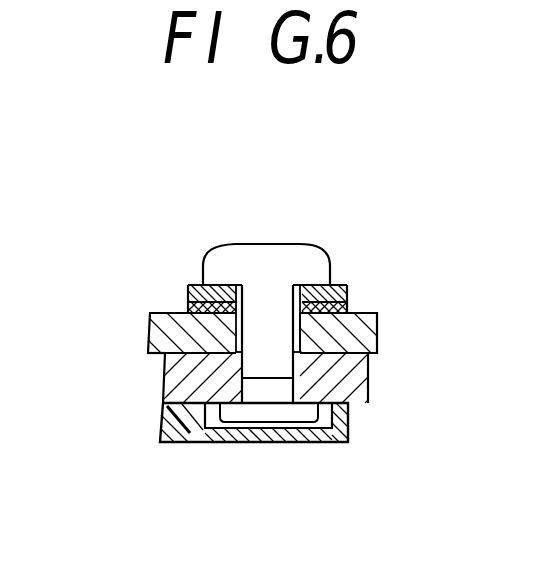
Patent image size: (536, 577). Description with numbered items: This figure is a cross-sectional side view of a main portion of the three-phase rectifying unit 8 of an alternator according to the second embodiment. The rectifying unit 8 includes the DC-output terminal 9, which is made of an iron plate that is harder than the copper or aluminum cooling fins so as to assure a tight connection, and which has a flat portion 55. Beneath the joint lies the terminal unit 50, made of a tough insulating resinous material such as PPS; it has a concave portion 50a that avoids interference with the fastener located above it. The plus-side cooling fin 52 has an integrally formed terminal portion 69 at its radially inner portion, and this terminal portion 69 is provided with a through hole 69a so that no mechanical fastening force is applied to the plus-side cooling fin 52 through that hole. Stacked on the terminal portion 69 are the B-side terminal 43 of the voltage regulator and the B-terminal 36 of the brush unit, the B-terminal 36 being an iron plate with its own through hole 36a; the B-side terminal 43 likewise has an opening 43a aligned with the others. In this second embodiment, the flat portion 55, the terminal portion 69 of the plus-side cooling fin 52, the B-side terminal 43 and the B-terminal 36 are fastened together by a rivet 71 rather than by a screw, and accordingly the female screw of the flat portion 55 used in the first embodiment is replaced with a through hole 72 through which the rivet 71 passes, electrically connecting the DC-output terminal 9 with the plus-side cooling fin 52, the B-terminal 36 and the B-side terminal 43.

The rivet 71 is at (257, 258).
The B-terminal 36 is at (188, 297).
The B-side terminal 43 is at (188, 307).
The through hole 36a is at (299, 300).
The lower washer hole edge 43a is at (278, 285).
The plus-side cooling fin 52 is at (150, 314).
The through hole 72 is at (242, 378).
The terminal portion 69 is at (376, 314).
The through hole 69a is at (300, 334).
The flat portion 55 is at (369, 392).
The DC-output terminal 9 is at (378, 362).
The terminal unit 50 is at (182, 433).
The concave portion 50a is at (263, 423).
The three-phase rectifying unit 8 is at (352, 448).